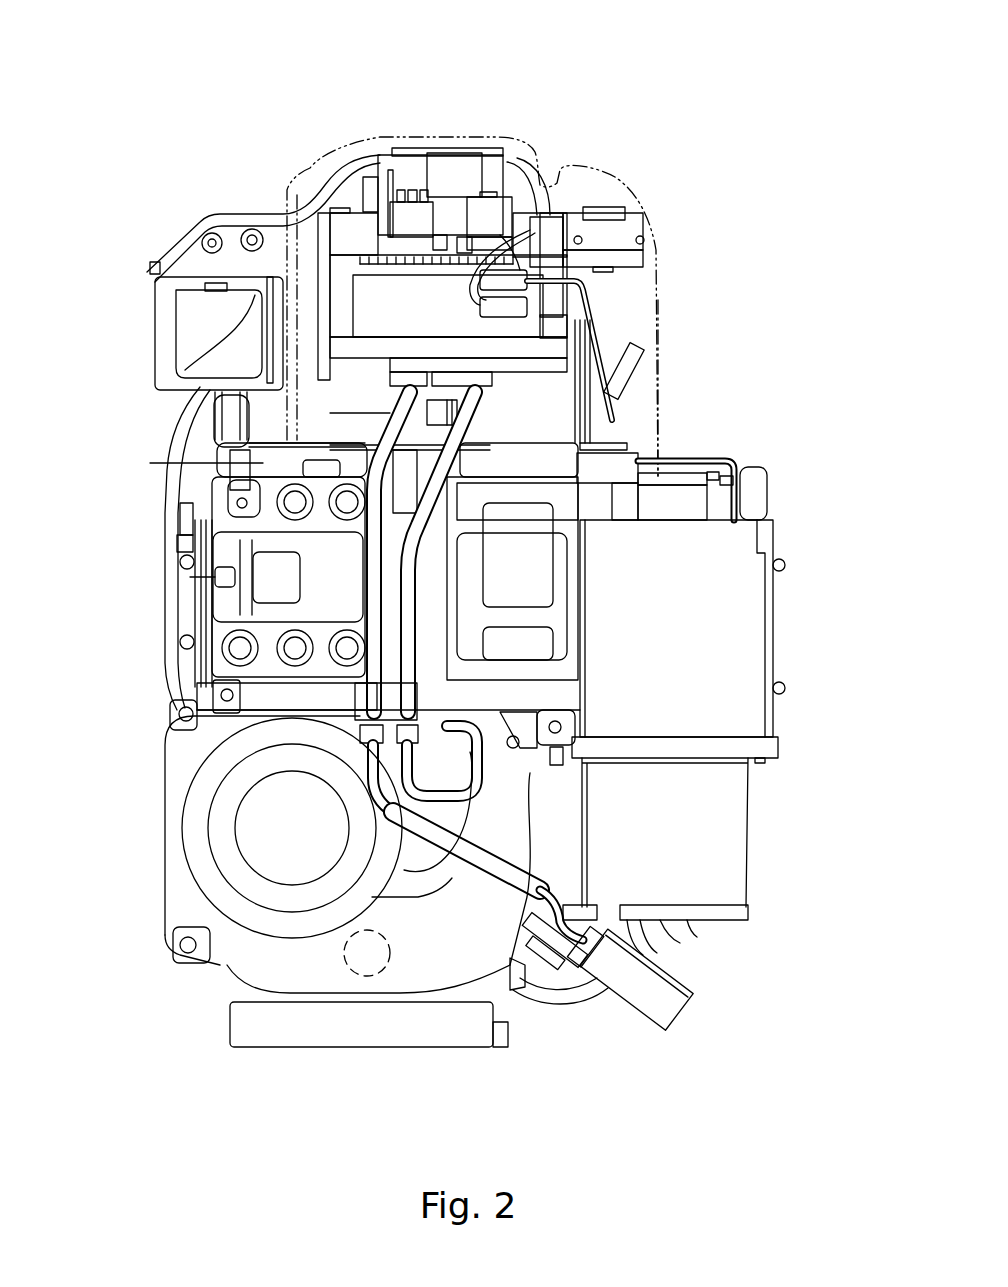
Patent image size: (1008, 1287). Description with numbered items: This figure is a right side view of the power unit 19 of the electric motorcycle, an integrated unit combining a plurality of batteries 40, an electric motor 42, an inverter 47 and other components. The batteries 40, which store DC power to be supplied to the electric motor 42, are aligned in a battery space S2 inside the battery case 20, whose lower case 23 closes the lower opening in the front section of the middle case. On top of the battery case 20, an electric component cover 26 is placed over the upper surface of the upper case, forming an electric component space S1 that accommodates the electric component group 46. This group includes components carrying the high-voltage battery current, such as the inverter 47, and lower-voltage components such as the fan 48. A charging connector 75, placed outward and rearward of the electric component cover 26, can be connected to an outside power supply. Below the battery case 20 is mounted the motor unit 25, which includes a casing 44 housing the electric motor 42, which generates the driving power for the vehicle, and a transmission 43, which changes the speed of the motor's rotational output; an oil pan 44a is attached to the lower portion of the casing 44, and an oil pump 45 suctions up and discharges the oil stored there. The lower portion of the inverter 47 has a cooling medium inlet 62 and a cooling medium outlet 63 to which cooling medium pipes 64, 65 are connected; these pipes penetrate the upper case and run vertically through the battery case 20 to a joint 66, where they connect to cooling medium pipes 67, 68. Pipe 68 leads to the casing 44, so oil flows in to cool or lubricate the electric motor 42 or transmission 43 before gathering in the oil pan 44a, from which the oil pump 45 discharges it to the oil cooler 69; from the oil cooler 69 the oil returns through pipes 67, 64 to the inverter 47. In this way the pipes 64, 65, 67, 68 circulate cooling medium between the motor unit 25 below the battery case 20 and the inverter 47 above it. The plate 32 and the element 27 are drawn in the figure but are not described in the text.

The power unit 19 is at (750, 192).
The electric component group 46 is at (574, 144).
The electric component space S1 is at (330, 162).
The inverter 47 is at (372, 298).
The charging connector 75 is at (195, 323).
The electric component cover 26 is at (668, 297).
The cooling medium inlet 62 is at (440, 358).
The cooling medium outlet 63 is at (455, 384).
The fan 48 is at (540, 401).
The battery space S2 is at (150, 463).
The batteries 40 is at (575, 498).
The cooling medium pipe 64 is at (373, 568).
The cooling medium pipe 65 is at (407, 595).
The joint 66 is at (372, 678).
The cooling medium pipe 67 is at (370, 740).
The cooling medium pipe 68 is at (475, 780).
The mounting plate 32 is at (565, 693).
The battery case 20 is at (778, 619).
The lower case 23 is at (745, 848).
The casing 44 is at (163, 897).
The motor unit 25 is at (221, 1001).
The oil pan 44a is at (440, 1048).
The transmission 43 is at (300, 855).
The oil pump 45 is at (368, 975).
The electric motor 42 is at (418, 860).
The wiring harness 27 is at (573, 997).
The oil cooler 69 is at (687, 1008).